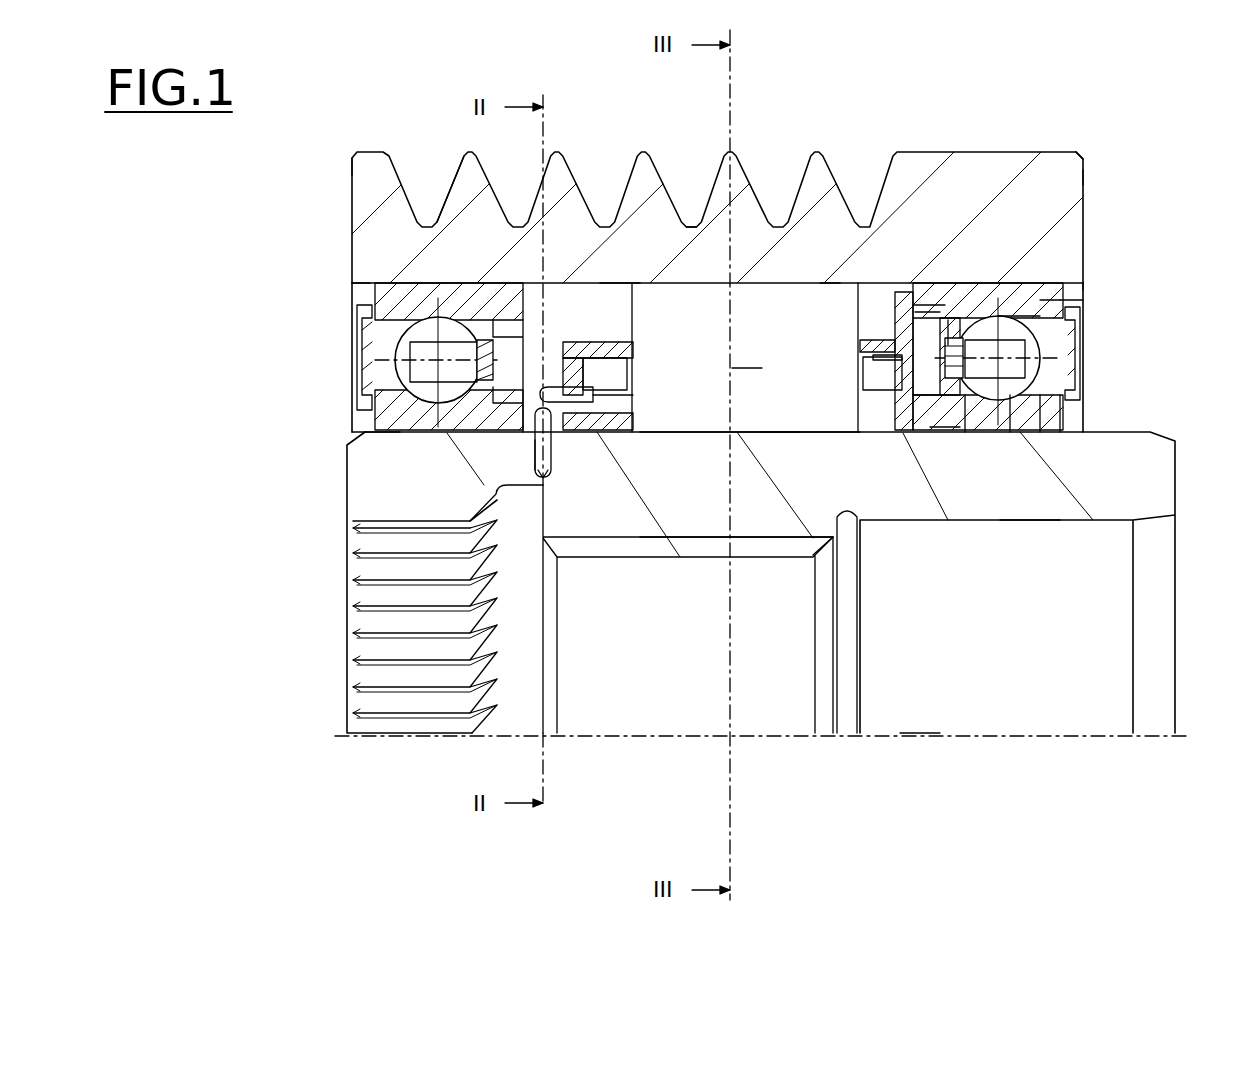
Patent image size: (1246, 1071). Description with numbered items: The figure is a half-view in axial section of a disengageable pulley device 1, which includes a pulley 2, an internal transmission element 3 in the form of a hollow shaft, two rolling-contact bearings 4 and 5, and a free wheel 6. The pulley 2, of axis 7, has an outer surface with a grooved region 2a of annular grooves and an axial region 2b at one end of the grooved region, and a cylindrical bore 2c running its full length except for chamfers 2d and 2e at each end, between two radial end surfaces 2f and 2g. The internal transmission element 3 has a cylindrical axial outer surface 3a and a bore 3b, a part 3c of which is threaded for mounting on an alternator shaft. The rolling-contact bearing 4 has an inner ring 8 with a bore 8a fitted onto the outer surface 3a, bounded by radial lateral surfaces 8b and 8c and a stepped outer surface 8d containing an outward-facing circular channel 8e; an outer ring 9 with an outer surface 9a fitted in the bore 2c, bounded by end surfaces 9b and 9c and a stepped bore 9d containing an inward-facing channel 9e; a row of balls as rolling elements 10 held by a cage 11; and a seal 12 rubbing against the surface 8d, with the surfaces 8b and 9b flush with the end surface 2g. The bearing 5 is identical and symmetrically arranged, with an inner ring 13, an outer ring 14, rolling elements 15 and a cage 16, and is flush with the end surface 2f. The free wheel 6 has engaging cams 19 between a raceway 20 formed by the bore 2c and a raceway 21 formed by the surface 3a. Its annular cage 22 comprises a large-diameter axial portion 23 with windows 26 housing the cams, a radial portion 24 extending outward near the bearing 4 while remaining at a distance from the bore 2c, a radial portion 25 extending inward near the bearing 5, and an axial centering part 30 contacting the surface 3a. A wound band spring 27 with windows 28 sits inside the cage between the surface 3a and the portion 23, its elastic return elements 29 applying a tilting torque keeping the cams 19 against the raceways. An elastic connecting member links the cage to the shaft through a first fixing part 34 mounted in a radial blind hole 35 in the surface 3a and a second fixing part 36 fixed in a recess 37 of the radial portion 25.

The disengageable pulley device 1 is at (1135, 150).
The pulley 2 is at (1087, 218).
The grooved region 2a is at (450, 188).
The axial region 2b is at (1062, 133).
The cylindrical bore 2c is at (617, 293).
The chamfer 2d is at (1085, 283).
The chamfer 2e is at (355, 285).
The radial end surface 2f is at (352, 165).
The radial end surface 2g is at (1085, 176).
The internal transmission element 3 is at (1180, 470).
The cylindrical axial outer surface 3a is at (393, 422).
The bore 3b is at (1030, 520).
The threaded part 3c is at (685, 555).
The rolling-contact bearing 4 is at (1087, 358).
The rolling-contact bearing 5 is at (356, 346).
The free wheel 6 is at (827, 275).
The axis 7 is at (920, 735).
The inner ring 8 is at (1085, 400).
The cylindrical bore 8a is at (978, 432).
The radial lateral surface 8b is at (1085, 410).
The radial lateral surface 8c is at (905, 435).
The stepped cylindrical outer surface 8d is at (1060, 432).
The circular channel 8e is at (1020, 432).
The outer ring 9 is at (1075, 300).
The outer cylindrical surface 9a is at (1007, 313).
The end surface 9b is at (1087, 307).
The end surface 9c is at (915, 305).
The stepped cylindrical bore 9d is at (950, 330).
The circular channel 9e is at (1050, 305).
The rolling elements 10 is at (990, 315).
The cage 11 is at (948, 432).
The seal 12 is at (1085, 333).
The inner ring 13 is at (357, 408).
The outer ring 14 is at (355, 305).
The rolling elements 15 is at (425, 330).
The cage 16 is at (493, 330).
The cams 19 is at (747, 356).
The raceway 20 is at (787, 300).
The raceway 21 is at (780, 432).
The cage 22 is at (873, 328).
The large-diameter axial portion 23 is at (665, 283).
The radial portion 24 is at (893, 325).
The radial portion 25 is at (563, 435).
The windows 26 is at (845, 520).
The spring 27 is at (887, 388).
The windows 28 is at (605, 435).
The elastic return element 29 is at (593, 390).
The axial centering part 30 is at (577, 420).
The first fixing part 34 is at (537, 445).
The blind hole 35 is at (537, 455).
The second fixing part 36 is at (552, 385).
The recess 37 is at (560, 340).